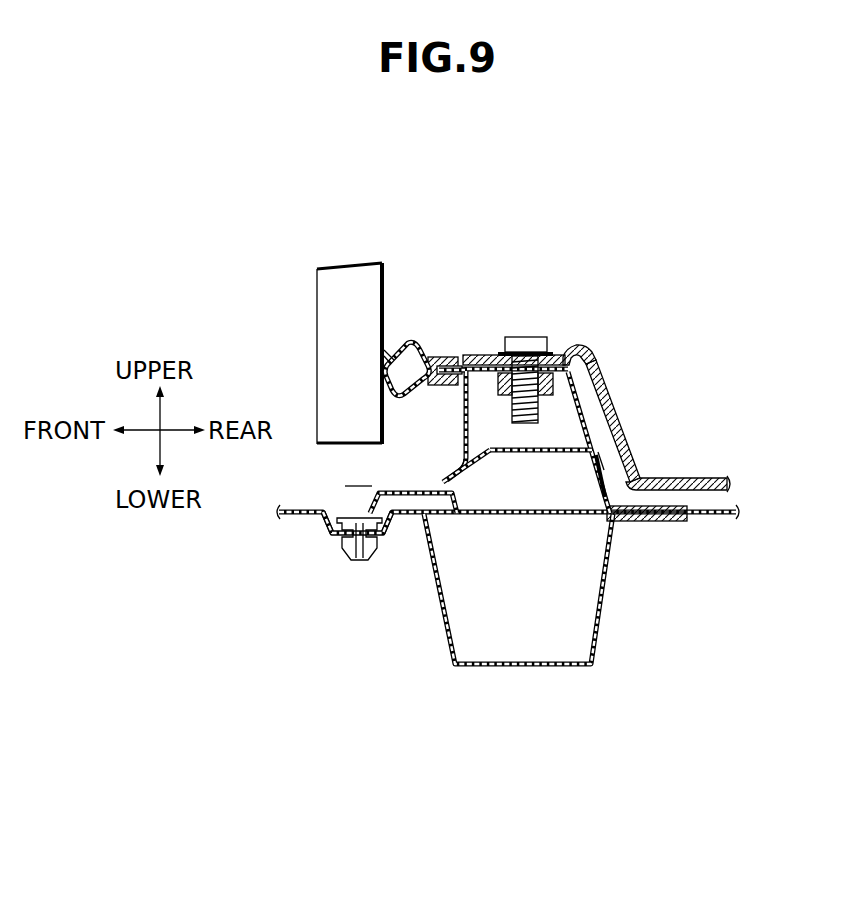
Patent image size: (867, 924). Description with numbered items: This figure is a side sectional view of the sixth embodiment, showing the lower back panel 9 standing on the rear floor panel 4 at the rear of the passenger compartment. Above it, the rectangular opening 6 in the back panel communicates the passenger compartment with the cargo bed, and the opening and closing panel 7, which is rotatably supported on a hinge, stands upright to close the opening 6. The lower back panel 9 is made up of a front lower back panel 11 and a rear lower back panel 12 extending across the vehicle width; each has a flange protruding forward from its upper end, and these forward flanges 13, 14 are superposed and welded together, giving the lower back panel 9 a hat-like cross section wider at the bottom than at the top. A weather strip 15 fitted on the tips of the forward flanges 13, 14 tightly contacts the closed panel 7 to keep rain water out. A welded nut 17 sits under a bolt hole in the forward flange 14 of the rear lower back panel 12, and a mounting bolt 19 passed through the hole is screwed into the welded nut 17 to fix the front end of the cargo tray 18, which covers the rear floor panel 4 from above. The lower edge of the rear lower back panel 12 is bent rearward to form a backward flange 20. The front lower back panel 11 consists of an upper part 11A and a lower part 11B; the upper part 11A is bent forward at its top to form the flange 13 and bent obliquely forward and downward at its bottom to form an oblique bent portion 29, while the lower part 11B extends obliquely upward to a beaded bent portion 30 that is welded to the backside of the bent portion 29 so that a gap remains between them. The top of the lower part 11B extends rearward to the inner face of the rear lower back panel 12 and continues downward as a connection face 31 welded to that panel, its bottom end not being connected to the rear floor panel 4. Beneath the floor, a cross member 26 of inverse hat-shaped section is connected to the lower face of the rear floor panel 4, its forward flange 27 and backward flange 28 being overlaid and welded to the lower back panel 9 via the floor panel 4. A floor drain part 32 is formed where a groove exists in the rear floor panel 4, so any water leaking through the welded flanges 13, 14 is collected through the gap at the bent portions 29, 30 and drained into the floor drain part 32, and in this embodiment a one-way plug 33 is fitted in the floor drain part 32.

The rear floor panel 4 is at (555, 518).
The opening 6 is at (522, 282).
The opening and closing panel 7 is at (320, 305).
The lower back panel 9 is at (602, 464).
The front lower back panel 11 is at (531, 441).
The upper part 11A is at (536, 434).
The lower part 11B is at (512, 456).
The rear lower back panel 12 is at (588, 442).
The forward flange 13 is at (457, 387).
The forward flange 14 is at (480, 355).
The weather strip 15 is at (400, 341).
The welded nut 17 is at (573, 360).
The cargo tray 18 is at (601, 388).
The mounting bolt 19 is at (530, 347).
The backward flange 20 is at (668, 490).
The cross member 26 is at (521, 667).
The forward flange 27 is at (293, 518).
The backward flange 28 is at (655, 522).
The oblique bent portion 29 is at (450, 472).
The bent portion 30 is at (455, 496).
The connection face 31 is at (593, 480).
The floor drain part 32 is at (358, 512).
The one-way plug 33 is at (352, 560).